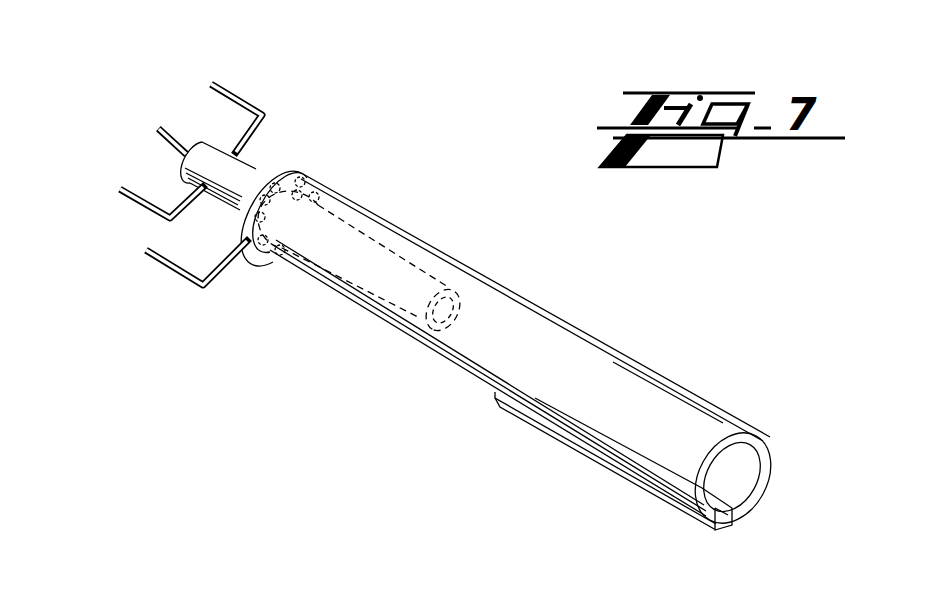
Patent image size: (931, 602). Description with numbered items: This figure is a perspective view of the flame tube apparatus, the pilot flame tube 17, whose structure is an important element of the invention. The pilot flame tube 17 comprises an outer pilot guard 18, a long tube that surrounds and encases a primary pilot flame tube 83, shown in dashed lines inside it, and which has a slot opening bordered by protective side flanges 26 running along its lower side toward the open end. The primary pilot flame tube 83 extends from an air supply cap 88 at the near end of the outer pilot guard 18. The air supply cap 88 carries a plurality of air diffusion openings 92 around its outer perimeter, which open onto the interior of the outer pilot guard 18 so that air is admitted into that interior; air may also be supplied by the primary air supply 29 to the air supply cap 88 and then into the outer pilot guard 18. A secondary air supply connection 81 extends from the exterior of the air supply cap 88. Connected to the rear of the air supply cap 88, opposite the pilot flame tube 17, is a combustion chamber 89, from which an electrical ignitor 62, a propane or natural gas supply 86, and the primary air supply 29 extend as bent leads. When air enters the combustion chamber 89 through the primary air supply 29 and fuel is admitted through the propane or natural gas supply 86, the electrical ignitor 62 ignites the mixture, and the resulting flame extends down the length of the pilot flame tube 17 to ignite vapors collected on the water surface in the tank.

The pilot flame tube 17 is at (503, 222).
The outer pilot guard 18 is at (580, 333).
The protective side flanges 26 is at (717, 533).
The primary air supply 29 is at (243, 95).
The electrical ignitor 62 is at (172, 130).
The secondary air supply connection 81 is at (167, 268).
The primary pilot flame tube 83 is at (337, 276).
The propane or natural gas supply 86 is at (122, 200).
The air supply cap 88 is at (287, 170).
The combustion chamber 89 is at (240, 160).
The air diffusion openings 92 is at (312, 174).